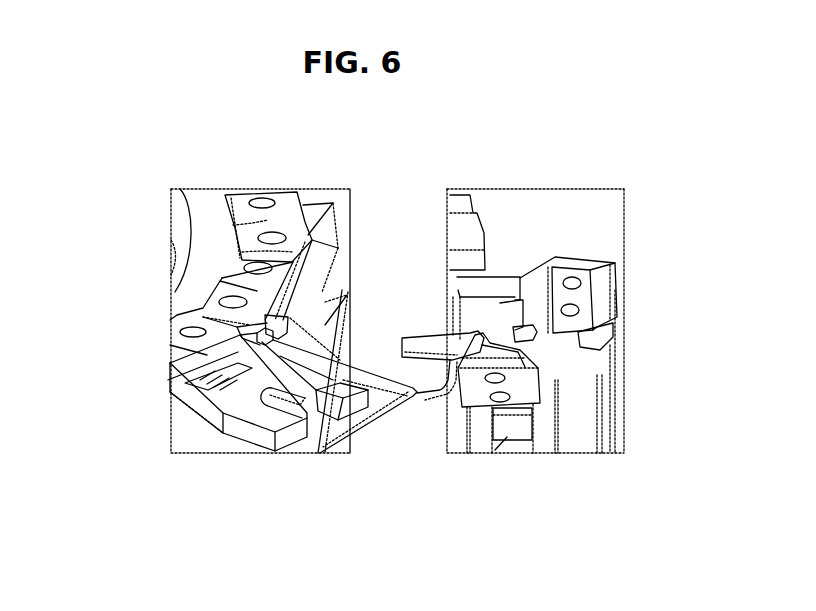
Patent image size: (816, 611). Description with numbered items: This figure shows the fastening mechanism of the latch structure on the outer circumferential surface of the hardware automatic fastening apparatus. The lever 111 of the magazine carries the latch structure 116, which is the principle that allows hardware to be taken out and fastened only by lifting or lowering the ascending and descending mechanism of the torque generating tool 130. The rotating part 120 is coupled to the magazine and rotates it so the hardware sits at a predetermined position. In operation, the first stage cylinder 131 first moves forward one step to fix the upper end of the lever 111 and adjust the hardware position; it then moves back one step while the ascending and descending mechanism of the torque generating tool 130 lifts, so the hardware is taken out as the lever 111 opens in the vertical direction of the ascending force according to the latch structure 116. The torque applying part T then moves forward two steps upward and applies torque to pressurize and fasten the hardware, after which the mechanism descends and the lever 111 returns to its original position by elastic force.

The lever 111 is at (297, 450).
The latch structure 116 is at (173, 342).
The rotating part 120 is at (173, 233).
The torque generating tool 130 is at (393, 205).
The first stage cylinder 131 is at (623, 412).
The torque applying part T is at (422, 198).